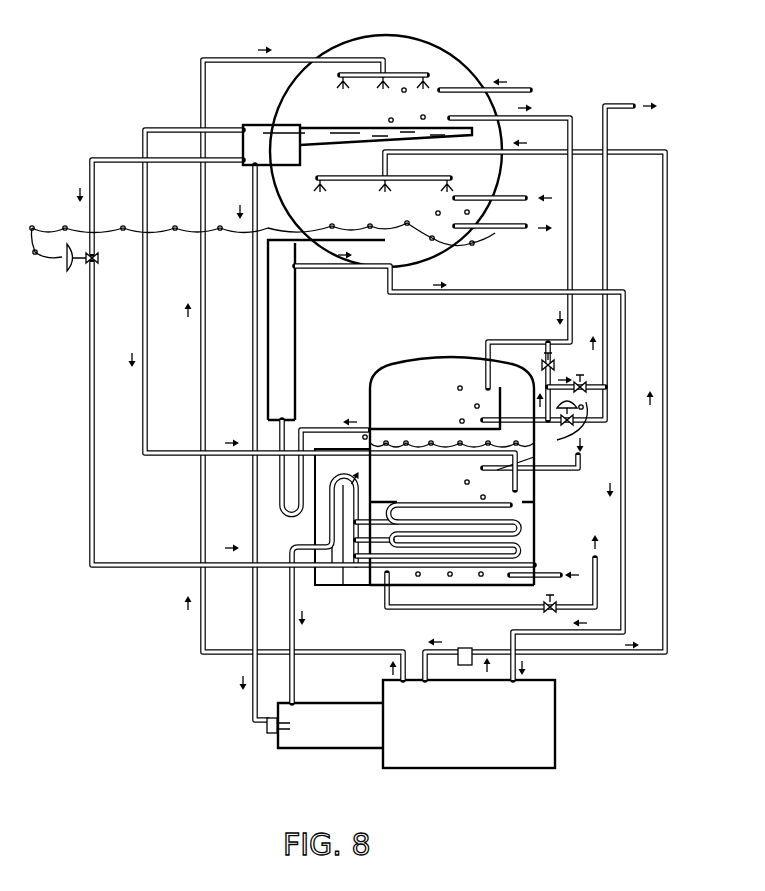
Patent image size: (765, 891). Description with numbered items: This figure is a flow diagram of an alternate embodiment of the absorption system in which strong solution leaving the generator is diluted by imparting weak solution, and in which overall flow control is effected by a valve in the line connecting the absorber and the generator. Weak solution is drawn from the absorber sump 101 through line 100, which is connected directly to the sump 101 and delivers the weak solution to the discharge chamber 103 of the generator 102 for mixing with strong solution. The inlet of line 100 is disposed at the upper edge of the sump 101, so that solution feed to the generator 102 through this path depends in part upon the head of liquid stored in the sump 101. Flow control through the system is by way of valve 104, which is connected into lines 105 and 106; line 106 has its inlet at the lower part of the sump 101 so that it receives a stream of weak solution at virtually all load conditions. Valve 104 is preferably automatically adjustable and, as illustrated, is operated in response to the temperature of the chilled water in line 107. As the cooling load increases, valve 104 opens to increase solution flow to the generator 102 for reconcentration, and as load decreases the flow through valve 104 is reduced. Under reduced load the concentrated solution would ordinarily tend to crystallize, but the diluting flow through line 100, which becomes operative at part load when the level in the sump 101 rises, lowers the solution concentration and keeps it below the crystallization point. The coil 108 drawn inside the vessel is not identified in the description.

The conduit 100 is at (143, 312).
The heater vessel 101 is at (284, 156).
The tank 102 is at (447, 493).
The tank wall 103 is at (527, 492).
The valve 104 is at (71, 270).
The conduit 105 is at (90, 373).
The conduit 106 is at (90, 172).
The spray pipe 107 is at (513, 230).
The heat exchange coil 108 is at (457, 543).